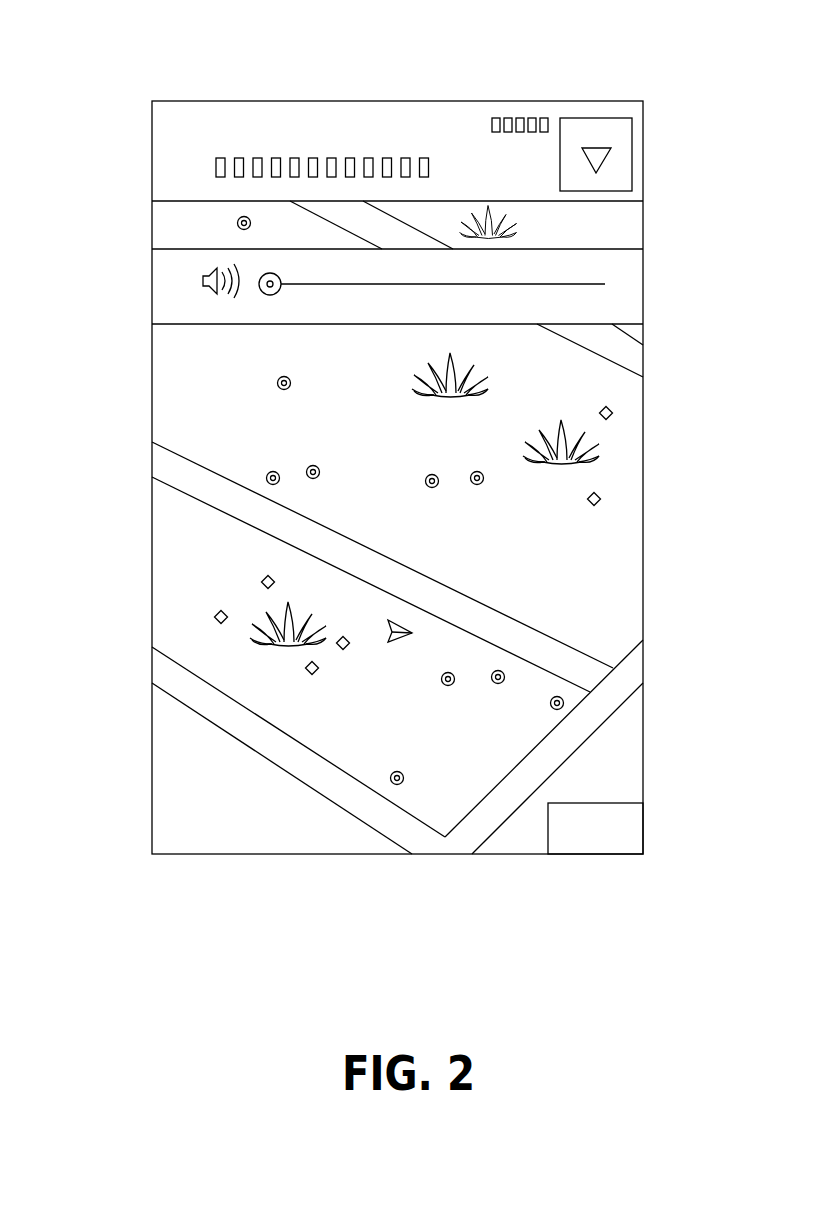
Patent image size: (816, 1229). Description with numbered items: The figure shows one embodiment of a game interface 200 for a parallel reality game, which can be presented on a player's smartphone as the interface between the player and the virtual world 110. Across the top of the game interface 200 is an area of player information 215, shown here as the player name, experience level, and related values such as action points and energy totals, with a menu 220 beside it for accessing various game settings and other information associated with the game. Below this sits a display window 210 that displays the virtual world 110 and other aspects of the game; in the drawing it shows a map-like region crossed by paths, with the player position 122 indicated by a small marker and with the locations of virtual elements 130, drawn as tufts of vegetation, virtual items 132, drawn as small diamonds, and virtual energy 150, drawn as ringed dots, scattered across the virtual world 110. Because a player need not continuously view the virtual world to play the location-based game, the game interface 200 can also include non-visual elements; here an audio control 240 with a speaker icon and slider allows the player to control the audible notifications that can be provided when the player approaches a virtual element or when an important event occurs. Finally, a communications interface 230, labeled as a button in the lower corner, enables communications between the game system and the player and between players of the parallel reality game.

The game interface 200 is at (410, 52).
The player information 215 is at (163, 122).
The menu 220 is at (623, 153).
The display window 210 is at (633, 232).
The audio control 240 is at (164, 268).
The virtual world 110 is at (637, 560).
The virtual element 130 is at (425, 375).
The virtual energy 150 is at (291, 388).
The virtual item 132 is at (262, 584).
The player position 122 is at (393, 637).
The communications interface 230 is at (637, 833).